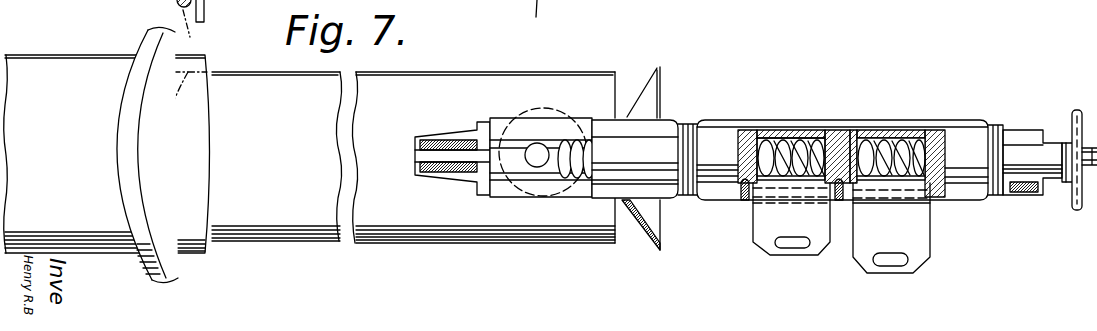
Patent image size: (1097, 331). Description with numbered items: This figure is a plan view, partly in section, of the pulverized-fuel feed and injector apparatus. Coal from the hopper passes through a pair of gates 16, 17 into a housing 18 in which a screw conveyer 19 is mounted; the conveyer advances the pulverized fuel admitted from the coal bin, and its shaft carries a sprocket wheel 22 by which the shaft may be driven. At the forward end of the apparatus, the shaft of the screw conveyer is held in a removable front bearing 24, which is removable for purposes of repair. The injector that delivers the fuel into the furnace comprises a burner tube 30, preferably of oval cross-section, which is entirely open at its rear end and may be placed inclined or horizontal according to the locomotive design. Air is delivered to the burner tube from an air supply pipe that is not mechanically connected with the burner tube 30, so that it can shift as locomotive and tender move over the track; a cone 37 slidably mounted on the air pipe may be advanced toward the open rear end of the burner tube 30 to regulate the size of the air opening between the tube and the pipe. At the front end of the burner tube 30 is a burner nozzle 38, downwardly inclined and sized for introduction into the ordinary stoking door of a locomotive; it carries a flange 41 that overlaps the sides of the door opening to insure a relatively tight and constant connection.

The gate 16 is at (765, 227).
The gate 17 is at (918, 232).
The housing 18 is at (957, 153).
The screw conveyer 19 is at (805, 147).
The sprocket wheel 22 is at (1081, 113).
The front bearing 24 is at (446, 140).
The burner tube 30 is at (298, 236).
The cone 37 is at (648, 242).
The burner nozzle 38 is at (127, 18).
The flange 41 is at (143, 274).